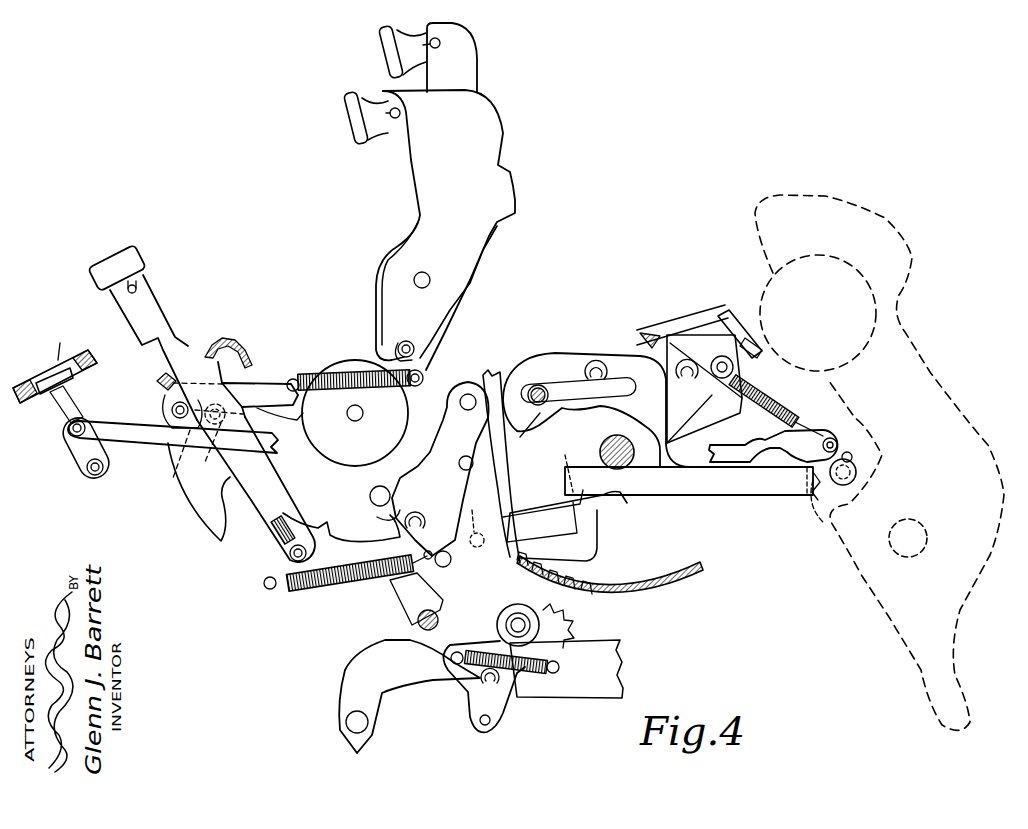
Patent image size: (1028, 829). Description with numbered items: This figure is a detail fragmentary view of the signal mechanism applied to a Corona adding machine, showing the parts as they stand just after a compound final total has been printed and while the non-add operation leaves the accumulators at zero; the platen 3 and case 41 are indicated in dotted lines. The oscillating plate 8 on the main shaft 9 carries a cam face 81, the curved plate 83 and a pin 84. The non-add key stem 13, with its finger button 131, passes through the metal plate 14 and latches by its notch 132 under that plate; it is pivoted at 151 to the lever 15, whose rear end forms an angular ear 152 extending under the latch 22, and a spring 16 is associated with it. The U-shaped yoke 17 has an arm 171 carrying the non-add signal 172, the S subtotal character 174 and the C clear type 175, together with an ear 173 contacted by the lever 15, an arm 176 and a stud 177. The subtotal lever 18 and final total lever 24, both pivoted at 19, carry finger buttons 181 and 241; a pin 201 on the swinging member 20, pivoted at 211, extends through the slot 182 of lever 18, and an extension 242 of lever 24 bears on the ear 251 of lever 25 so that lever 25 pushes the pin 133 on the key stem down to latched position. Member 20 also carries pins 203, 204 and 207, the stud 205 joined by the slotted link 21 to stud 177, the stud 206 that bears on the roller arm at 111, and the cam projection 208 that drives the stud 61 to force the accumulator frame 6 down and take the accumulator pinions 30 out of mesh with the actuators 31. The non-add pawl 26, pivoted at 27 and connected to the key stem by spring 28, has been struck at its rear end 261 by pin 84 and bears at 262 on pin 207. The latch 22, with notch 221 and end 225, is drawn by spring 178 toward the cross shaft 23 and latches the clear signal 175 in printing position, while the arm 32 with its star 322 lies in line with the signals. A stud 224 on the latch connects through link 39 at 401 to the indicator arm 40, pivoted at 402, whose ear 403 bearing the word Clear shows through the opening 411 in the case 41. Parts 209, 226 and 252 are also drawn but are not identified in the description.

The platen 3 is at (880, 300).
The accumulator frame end piece 6 is at (612, 672).
The oscillating plate 8 is at (448, 412).
The main shaft 9 is at (628, 458).
The non-add key stem 13 is at (160, 322).
The metal plate 14 is at (235, 342).
The lever 15 is at (329, 532).
The spring 16 is at (275, 534).
The U-shaped yoke 17 is at (597, 527).
The subtotal key or lever 18 is at (493, 133).
The pivot 19 is at (428, 275).
The swinging member 20 is at (495, 372).
The slotted link 21 is at (568, 358).
The latch 22 is at (760, 427).
The shaft 23 is at (862, 468).
The final total lever 24 is at (467, 86).
The lever 25 is at (275, 385).
The non-add pawl 26 is at (435, 468).
The pivot 27 is at (416, 514).
The spring 28 is at (310, 590).
The accumulator pinions 30 is at (573, 633).
The actuators 31 is at (600, 586).
The swinging arm 32 is at (646, 333).
The link 39 is at (139, 440).
The swinging indicator arm 40 is at (72, 470).
The case 41 is at (88, 357).
The stud 61 is at (427, 643).
The cam face 81 is at (498, 620).
The curved plate 83 is at (672, 585).
The pin 84 is at (462, 458).
The contact point on arm 111 is at (492, 733).
The finger button 131 is at (120, 255).
The notch 132 is at (157, 341).
The pin 133 is at (207, 448).
The pivotal attachment 151 is at (288, 558).
The angular ear 152 is at (804, 512).
The arm 171 is at (685, 415).
The non-add signal 172 is at (738, 324).
The ear 173 is at (550, 540).
The subtotal character 174 is at (748, 336).
The clear signal type 175 is at (760, 358).
The arm 176 is at (556, 425).
The stud 177 is at (598, 362).
The spring 178 is at (760, 400).
The finger button 181 is at (358, 123).
The slot 182 is at (445, 357).
The pin 201 is at (400, 342).
The pin 203 is at (447, 566).
The pin 204 is at (476, 507).
The stud 205 is at (538, 386).
The stud 206 is at (346, 722).
The pin 207 is at (372, 492).
The cam projection 208 is at (400, 617).
The pin 209 is at (170, 409).
The pivot 211 is at (358, 421).
The subtotal engaging notch 221 is at (817, 475).
The stud 224 is at (840, 445).
The end of pawl 225 is at (855, 454).
The pin clip 226 is at (686, 362).
The final total button 241 is at (393, 58).
The extension 242 is at (470, 293).
The ear 251 is at (373, 360).
The cam lobe 252 is at (175, 470).
The rear end of pawl 261 is at (483, 502).
The contact point 262 is at (380, 518).
The star signal 322 is at (724, 315).
The connection point 401 is at (70, 436).
The pivot 402 is at (96, 477).
The formed over ear 403 is at (42, 380).
The opening 411 is at (64, 336).